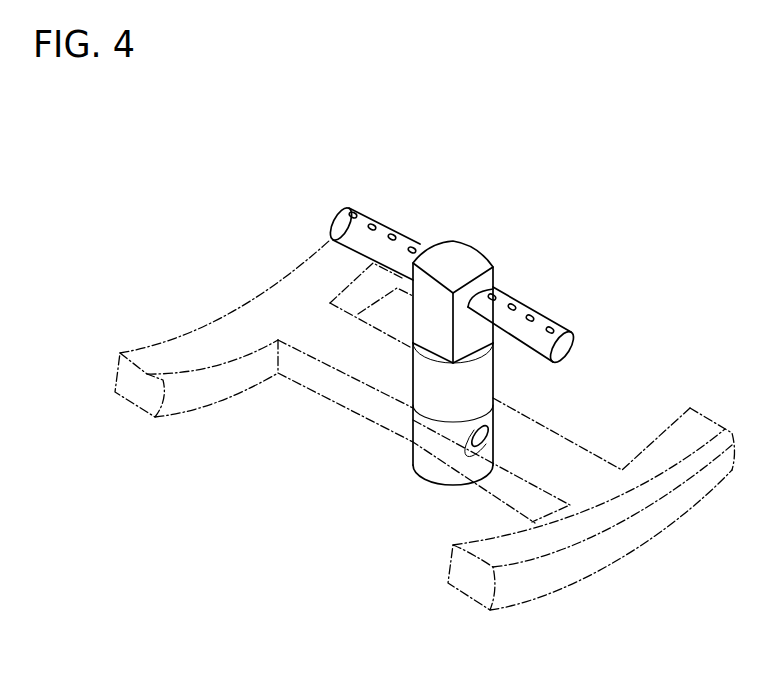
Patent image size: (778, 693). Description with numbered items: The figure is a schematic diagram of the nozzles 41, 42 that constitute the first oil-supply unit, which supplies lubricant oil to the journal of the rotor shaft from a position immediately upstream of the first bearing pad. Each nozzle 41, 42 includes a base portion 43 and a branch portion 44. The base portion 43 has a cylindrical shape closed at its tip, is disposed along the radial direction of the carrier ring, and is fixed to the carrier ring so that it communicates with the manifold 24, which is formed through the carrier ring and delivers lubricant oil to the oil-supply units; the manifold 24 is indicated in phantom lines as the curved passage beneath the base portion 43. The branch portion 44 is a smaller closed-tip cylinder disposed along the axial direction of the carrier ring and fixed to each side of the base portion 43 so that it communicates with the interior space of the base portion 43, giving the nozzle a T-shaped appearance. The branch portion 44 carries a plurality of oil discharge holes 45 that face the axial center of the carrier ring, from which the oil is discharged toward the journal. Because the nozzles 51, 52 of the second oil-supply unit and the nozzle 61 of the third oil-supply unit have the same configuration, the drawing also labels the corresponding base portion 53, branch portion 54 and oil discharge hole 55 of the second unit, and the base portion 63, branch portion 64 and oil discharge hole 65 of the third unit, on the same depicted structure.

The manifold 24 is at (520, 584).
The nozzle 41 is at (450, 309).
The nozzle 42 is at (450, 309).
The base portion 43 is at (352, 363).
The branch portion 44 is at (413, 314).
The oil discharge holes 45 is at (501, 234).
The nozzle 51 is at (450, 309).
The nozzle 52 is at (450, 309).
The base portion 53 is at (352, 363).
The branch portion 54 is at (413, 314).
The oil discharge hole 55 is at (501, 234).
The nozzle 61 is at (450, 309).
The base portion 63 is at (427, 388).
The branch portion 64 is at (337, 232).
The oil discharge hole 65 is at (393, 237).